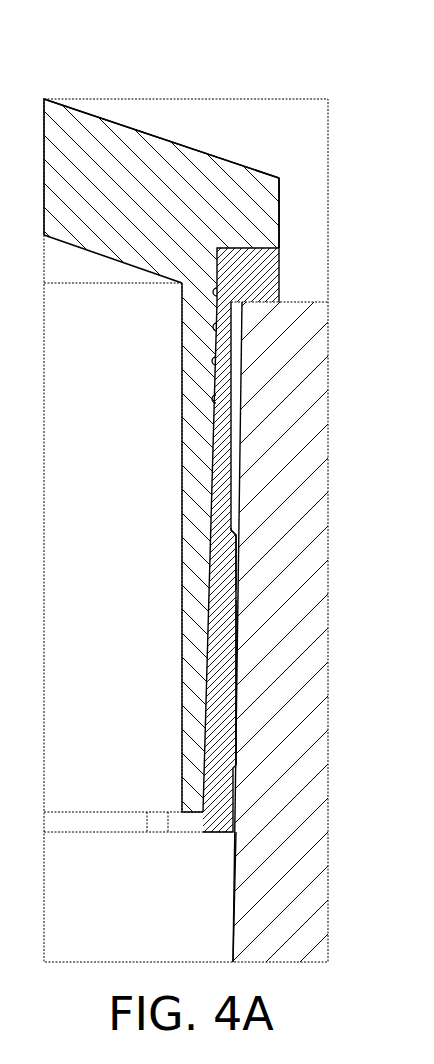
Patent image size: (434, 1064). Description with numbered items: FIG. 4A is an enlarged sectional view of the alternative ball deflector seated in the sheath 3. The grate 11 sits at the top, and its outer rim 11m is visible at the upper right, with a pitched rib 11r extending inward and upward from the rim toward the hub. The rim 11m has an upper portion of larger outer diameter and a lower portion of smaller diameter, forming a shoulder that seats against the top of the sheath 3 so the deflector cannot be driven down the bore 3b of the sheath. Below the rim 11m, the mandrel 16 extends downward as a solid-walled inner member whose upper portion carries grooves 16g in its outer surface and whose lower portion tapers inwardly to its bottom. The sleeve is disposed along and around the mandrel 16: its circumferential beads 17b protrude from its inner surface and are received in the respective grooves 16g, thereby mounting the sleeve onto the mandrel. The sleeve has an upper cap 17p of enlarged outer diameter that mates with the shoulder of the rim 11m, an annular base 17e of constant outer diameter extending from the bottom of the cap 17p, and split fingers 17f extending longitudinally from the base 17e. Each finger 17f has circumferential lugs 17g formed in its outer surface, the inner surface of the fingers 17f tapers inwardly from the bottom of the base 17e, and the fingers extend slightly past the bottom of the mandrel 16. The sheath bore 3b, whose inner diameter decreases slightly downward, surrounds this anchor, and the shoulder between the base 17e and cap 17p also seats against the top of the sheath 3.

The grate 11 is at (217, 532).
The ribs 11r is at (157, 139).
The outer rim 11m is at (262, 203).
The mandrel 16 is at (190, 590).
The grooves 16g is at (214, 399).
The upper cap 17p is at (262, 278).
The circumferential beads 17b is at (218, 362).
The annular base 17e is at (228, 442).
The circumferential lugs 17g is at (237, 560).
The split fingers 17f is at (227, 622).
The sheath 3 is at (318, 742).
The bore 3b is at (238, 937).